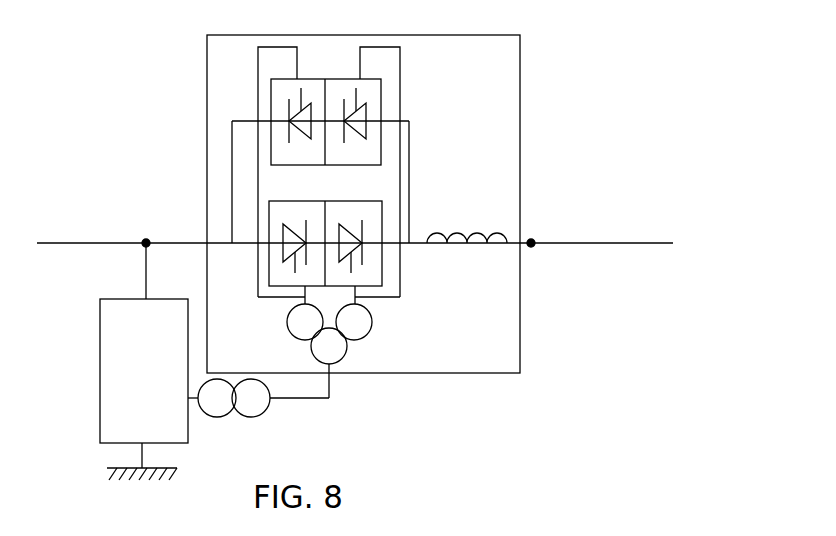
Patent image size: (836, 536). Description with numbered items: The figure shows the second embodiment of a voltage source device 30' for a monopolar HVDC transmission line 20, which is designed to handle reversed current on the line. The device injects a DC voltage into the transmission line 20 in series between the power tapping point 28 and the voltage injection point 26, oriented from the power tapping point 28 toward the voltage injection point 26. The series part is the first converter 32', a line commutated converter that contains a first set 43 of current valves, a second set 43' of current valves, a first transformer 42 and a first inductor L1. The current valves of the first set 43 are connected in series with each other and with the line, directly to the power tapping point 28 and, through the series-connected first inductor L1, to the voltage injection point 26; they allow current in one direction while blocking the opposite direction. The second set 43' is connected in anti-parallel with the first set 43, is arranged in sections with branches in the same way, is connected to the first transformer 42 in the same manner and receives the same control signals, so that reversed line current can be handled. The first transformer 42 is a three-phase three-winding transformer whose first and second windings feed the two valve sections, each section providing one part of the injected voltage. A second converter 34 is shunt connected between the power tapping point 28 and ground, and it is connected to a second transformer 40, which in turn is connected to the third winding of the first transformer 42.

The transmission line 20 is at (90, 242).
The power tapping point 28 is at (146, 243).
The second converter 34 is at (144, 389).
The second transformer 40 is at (258, 417).
The first transformer 42 is at (352, 351).
The first set of current valves 43 is at (329, 237).
The second set of current valves 43' is at (320, 169).
The first inductor L1 is at (467, 219).
The voltage injection point 26 is at (531, 243).
The voltage source device 30' is at (455, 235).
The first converter 32' is at (363, 246).